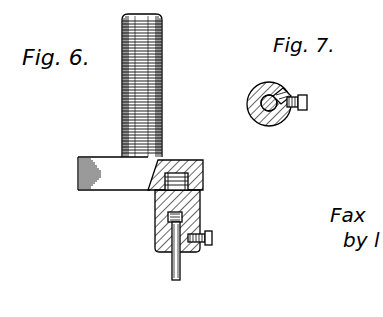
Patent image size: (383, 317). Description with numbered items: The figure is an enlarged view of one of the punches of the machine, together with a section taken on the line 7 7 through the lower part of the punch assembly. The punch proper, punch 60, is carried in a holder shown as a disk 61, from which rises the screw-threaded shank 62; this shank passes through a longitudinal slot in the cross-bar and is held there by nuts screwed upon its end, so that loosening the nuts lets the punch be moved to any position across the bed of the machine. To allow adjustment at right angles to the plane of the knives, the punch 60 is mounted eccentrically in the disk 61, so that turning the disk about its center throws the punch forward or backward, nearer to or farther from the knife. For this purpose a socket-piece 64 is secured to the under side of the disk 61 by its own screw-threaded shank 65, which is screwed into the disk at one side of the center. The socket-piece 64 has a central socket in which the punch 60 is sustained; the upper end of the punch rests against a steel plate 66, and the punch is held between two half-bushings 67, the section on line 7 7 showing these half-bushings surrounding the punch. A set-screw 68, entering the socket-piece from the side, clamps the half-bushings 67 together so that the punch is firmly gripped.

In FIG. 6, the punch 60 is at (181, 273).
In FIG. 7, the punch 60 is at (246, 108).
In FIG. 6, the disk 61 is at (175, 160).
In FIG. 6, the screw-threaded shank 62 is at (165, 50).
In FIG. 6, the socket-piece 64 is at (203, 200).
In FIG. 7, the socket-piece 64 is at (250, 89).
In FIG. 6, the screw-threaded shank 65 is at (186, 178).
In FIG. 6, the steel plate 66 is at (200, 210).
In FIG. 6, the half-bushings 67 is at (172, 256).
In FIG. 7, the half-bushings 67 is at (274, 88).
In FIG. 6, the set-screw 68 is at (212, 237).
In FIG. 7, the set-screw 68 is at (300, 94).
In FIG. 6, the section line 7 7 is at (155, 237).